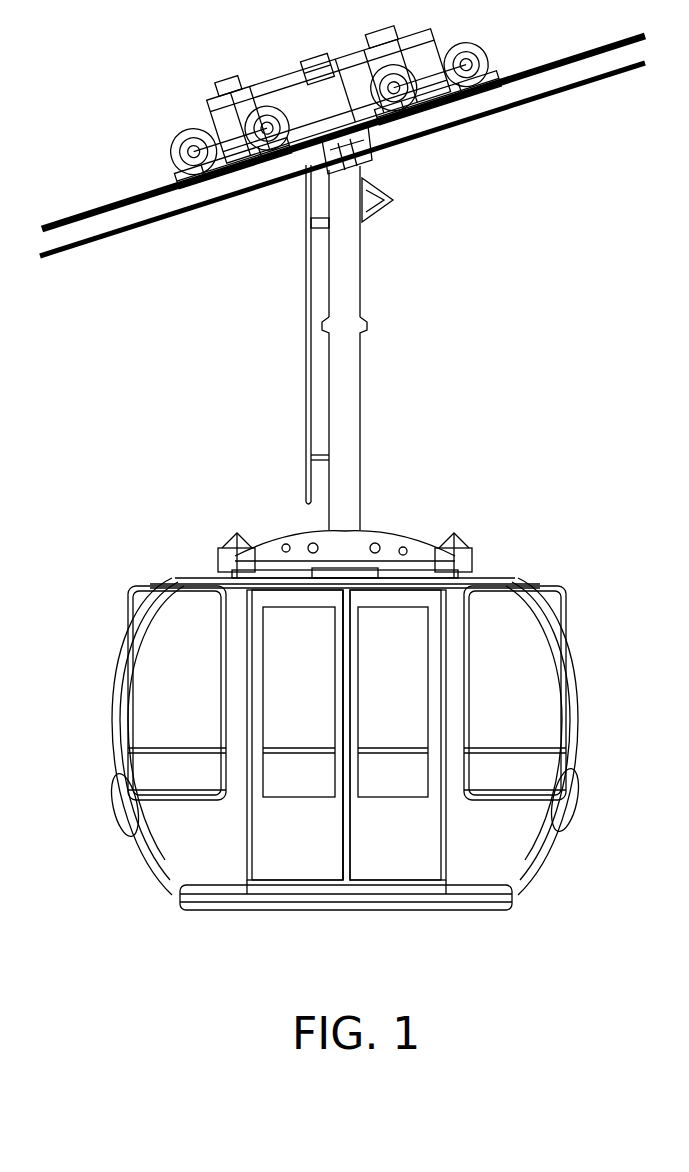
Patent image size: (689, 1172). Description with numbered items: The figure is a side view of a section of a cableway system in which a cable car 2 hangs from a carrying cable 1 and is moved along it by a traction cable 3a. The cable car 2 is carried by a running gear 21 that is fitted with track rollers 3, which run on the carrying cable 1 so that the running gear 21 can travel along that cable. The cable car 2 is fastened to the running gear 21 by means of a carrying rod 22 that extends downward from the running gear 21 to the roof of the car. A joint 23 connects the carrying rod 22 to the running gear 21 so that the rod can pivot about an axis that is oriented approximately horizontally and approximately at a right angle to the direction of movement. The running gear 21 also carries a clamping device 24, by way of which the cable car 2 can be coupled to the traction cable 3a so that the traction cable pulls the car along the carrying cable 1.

The carrying cable 1 is at (567, 52).
The hauling cable 3a is at (571, 84).
The track rollers 3 is at (347, 164).
The running gear 21 is at (291, 105).
The clamping device 24 is at (302, 43).
The joint 23 is at (366, 152).
The carrying rod 22 is at (352, 384).
The cable car 2 is at (530, 588).